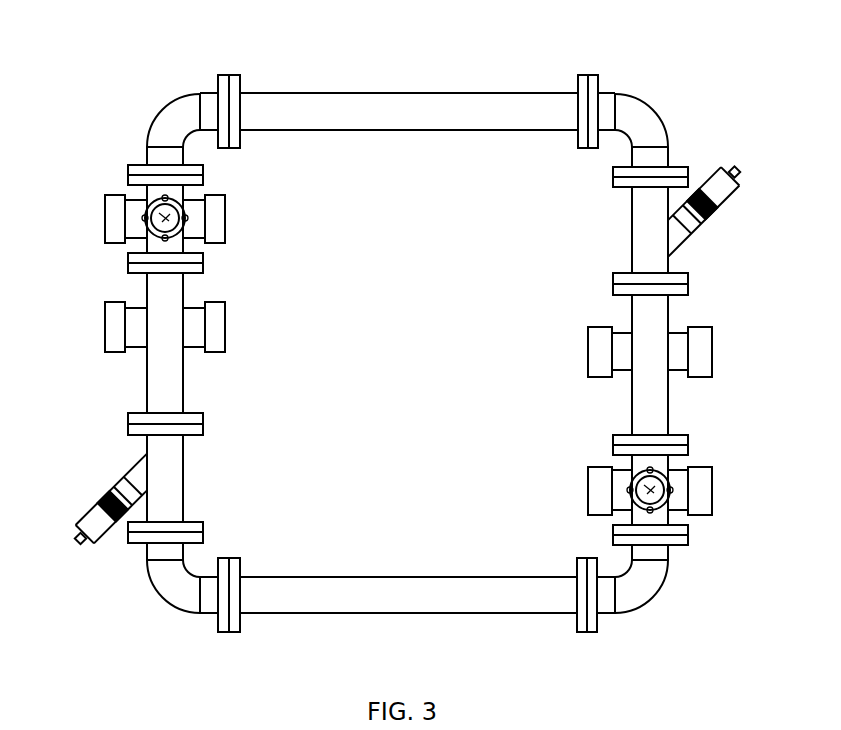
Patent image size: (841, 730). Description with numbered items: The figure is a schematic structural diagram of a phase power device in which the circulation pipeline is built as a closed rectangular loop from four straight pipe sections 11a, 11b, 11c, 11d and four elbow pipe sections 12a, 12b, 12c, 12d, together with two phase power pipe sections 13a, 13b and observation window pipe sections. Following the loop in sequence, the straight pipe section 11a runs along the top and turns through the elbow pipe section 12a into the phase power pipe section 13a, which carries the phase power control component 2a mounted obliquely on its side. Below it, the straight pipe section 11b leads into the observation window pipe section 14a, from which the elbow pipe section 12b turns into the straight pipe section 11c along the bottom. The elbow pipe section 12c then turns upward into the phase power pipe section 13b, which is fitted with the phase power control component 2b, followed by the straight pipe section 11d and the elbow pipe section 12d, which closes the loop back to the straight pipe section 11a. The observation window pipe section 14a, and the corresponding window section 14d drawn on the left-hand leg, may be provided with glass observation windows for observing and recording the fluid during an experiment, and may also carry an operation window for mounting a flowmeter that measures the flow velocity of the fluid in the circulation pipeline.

The straight pipe section 11a is at (409, 70).
The straight pipe section 11b is at (689, 322).
The straight pipe section 11c is at (408, 619).
The straight pipe section 11d is at (121, 294).
The elbow pipe section 12a is at (608, 88).
The elbow pipe section 12b is at (616, 603).
The elbow pipe section 12c is at (165, 602).
The elbow pipe section 12d is at (168, 87).
The phase power pipe section 13a is at (700, 167).
The phase power pipe section 13b is at (111, 410).
The observation window pipe section 14a is at (689, 421).
The valve 14d is at (120, 150).
The phase power control component 2a is at (729, 175).
The phase power control component 2b is at (87, 460).